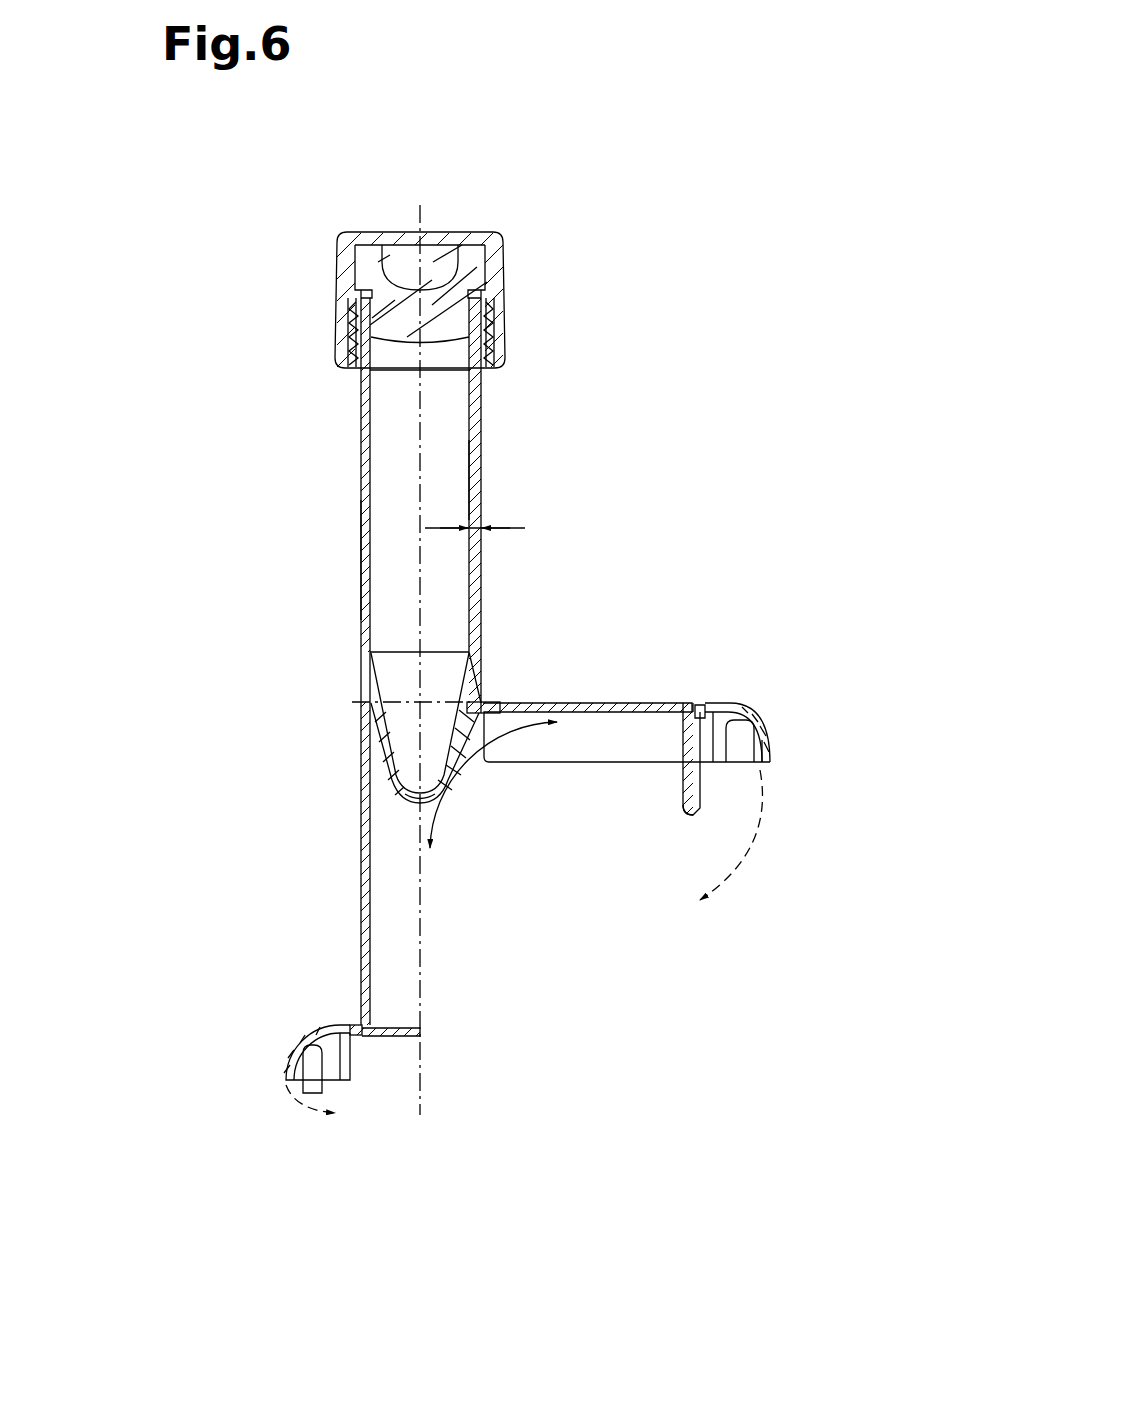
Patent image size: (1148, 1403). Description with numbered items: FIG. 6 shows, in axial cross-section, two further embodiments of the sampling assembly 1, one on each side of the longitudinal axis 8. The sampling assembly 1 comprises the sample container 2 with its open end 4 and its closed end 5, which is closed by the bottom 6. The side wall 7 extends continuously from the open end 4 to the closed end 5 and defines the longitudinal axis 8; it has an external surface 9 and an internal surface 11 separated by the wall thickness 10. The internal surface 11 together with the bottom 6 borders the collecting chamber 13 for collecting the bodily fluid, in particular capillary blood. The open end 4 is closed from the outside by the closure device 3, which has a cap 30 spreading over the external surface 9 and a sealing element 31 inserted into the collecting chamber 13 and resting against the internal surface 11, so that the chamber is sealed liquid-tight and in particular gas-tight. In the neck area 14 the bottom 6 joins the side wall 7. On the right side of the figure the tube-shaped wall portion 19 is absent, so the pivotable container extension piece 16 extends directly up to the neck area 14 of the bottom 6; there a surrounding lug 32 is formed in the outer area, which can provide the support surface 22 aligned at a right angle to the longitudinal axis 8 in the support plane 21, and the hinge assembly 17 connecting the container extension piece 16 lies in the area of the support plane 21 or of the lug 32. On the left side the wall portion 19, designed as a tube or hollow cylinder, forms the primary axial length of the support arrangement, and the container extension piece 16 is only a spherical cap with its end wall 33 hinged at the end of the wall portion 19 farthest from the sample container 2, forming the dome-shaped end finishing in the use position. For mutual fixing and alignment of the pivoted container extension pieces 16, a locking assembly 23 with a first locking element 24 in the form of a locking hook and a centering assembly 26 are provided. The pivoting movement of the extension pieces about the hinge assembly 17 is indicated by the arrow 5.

The sampling assembly 1 is at (668, 155).
The sample container 2 is at (347, 459).
The closure device 3 is at (335, 230).
The open end 4 is at (500, 296).
The closed end 5 is at (444, 813).
The bottom 6 is at (393, 790).
The side wall 7 is at (363, 540).
The longitudinal axis 8 is at (416, 222).
The external surface 9 is at (360, 592).
The wall thickness 10 is at (513, 527).
The internal surface 11 is at (468, 489).
The collecting chamber 13 is at (450, 408).
The neck area 14 is at (490, 668).
The container extension piece 16 is at (640, 770).
The hinge assembly 17 is at (492, 700).
The wall portion 19 is at (362, 882).
The support plane 21 is at (404, 697).
The support surface 22 is at (478, 708).
The locking assembly 23 is at (705, 801).
The first locking element 24 is at (688, 795).
The centering assembly 26 is at (750, 775).
The cap 30 is at (343, 312).
The sealing element 31 is at (440, 300).
The lug 32 is at (486, 700).
The end wall 33 is at (750, 708).